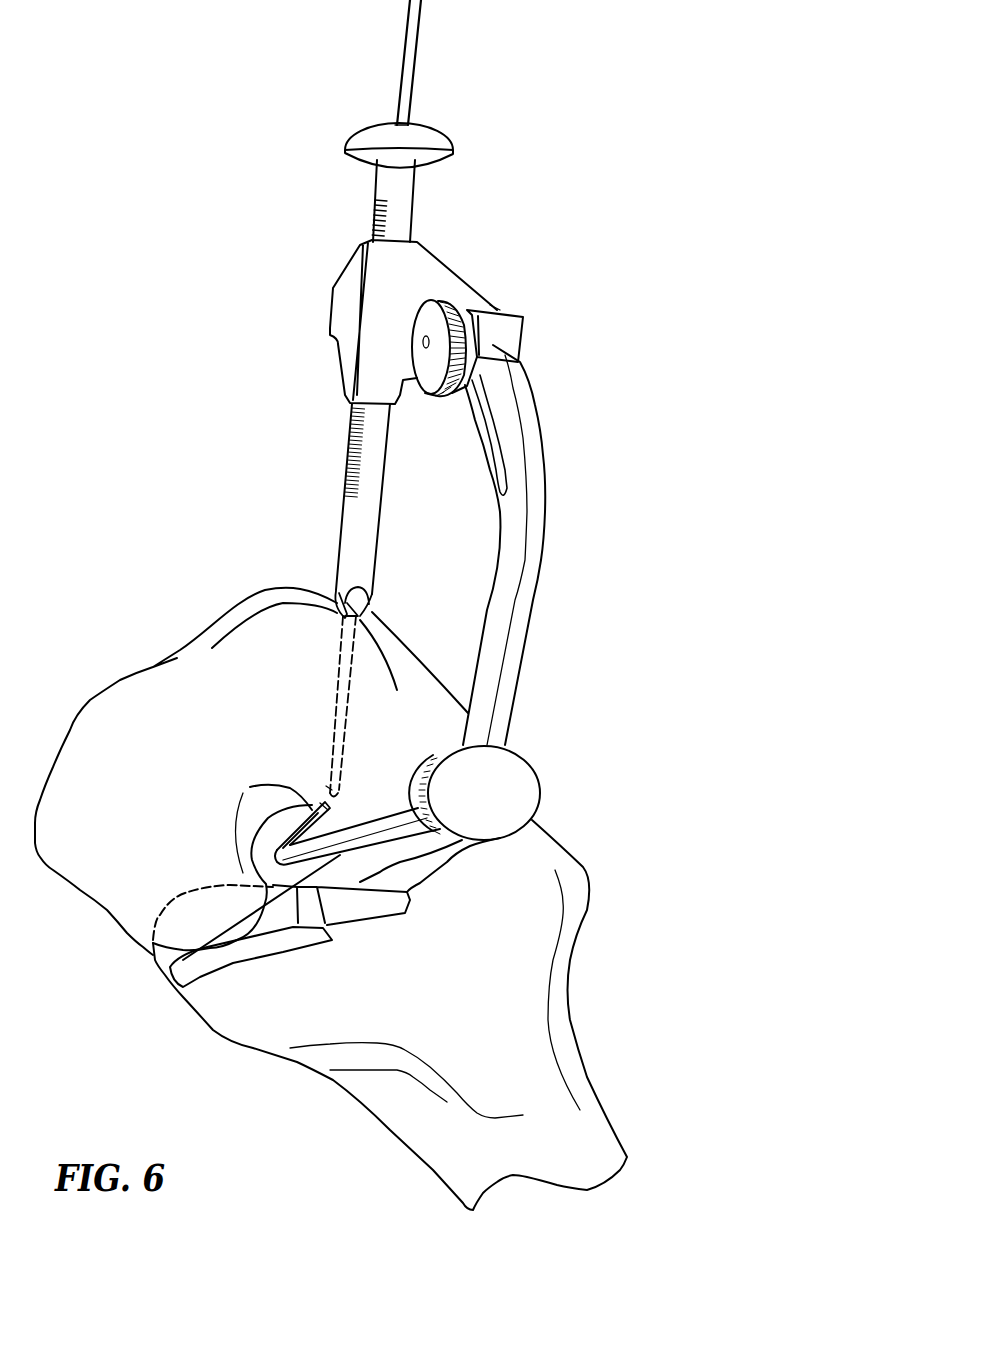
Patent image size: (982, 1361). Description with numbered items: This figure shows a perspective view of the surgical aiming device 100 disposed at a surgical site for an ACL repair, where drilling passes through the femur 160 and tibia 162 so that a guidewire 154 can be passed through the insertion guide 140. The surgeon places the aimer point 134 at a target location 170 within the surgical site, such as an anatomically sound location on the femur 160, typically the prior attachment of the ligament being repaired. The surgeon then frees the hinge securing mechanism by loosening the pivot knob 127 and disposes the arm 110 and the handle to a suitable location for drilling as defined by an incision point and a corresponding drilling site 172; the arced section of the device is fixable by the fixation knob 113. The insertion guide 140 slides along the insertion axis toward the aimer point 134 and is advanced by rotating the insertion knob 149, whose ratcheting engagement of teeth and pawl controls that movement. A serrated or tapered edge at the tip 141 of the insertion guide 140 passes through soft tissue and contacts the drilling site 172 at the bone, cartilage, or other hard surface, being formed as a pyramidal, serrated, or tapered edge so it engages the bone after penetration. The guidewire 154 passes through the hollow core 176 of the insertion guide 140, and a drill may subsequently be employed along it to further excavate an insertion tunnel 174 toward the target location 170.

The surgical aiming device 100 is at (572, 252).
The arm 110 is at (547, 520).
The fixation knob 113 is at (425, 320).
The pivot knob 127 is at (507, 790).
The aimer point 134 is at (322, 806).
The insertion guide 140 is at (350, 432).
The tip 141 is at (350, 787).
The insertion knob 149 is at (497, 142).
The guidewire 154 is at (412, 24).
The femur 160 is at (90, 700).
The tibia 162 is at (220, 1040).
The target location 170 is at (313, 777).
The drilling site 172 is at (378, 606).
The insertion tunnel 174 is at (326, 726).
The hollow core 176 is at (392, 118).